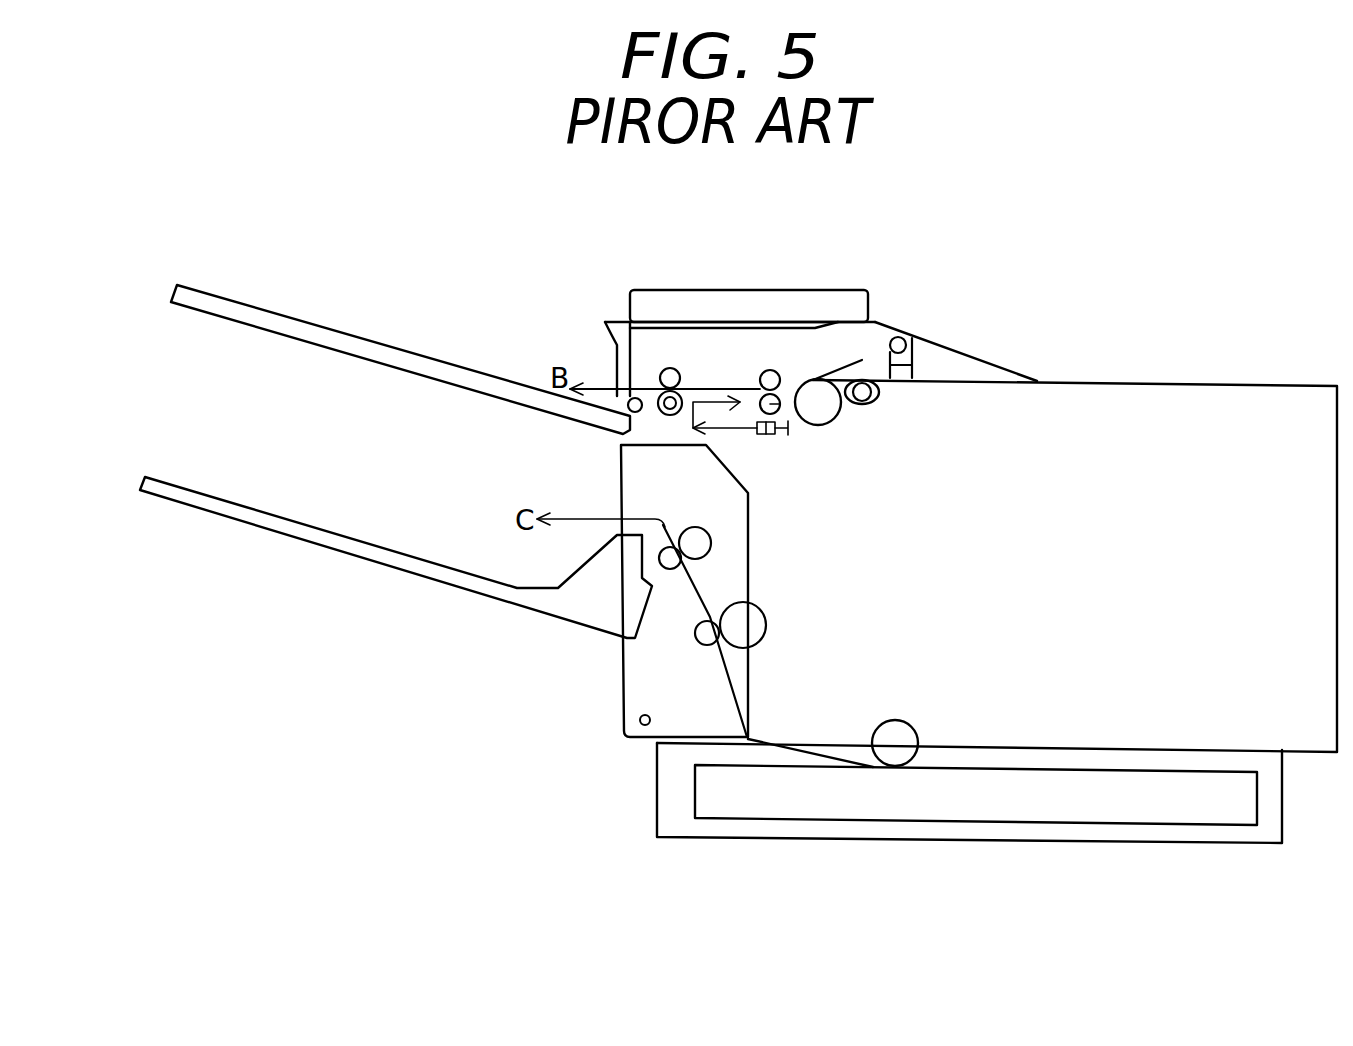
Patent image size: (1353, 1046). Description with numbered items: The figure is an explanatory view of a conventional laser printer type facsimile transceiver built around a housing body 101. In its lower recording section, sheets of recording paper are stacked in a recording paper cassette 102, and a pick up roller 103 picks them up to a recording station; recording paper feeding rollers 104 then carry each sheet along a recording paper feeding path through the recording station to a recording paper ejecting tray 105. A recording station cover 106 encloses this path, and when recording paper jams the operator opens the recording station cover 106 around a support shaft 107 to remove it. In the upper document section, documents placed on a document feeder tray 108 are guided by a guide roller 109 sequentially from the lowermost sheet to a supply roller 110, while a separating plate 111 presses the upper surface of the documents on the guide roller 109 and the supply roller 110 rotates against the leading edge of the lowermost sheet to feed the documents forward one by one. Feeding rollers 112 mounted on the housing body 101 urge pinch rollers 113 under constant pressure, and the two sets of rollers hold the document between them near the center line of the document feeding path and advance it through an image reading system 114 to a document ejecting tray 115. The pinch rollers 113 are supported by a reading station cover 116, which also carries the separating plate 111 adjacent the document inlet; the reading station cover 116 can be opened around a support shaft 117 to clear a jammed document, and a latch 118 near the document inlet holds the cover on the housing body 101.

The housing body 101 is at (1190, 382).
The recording paper cassette 102 is at (1208, 810).
The pick up roller 103 is at (897, 753).
The recording paper feeding rollers 104 is at (700, 545).
The recording paper ejecting tray 105 is at (378, 553).
The recording station cover 106 is at (620, 473).
The support shaft 107 is at (622, 735).
The document feeder tray 108 is at (950, 366).
The guide roller 109 is at (877, 400).
The supply roller 110 is at (838, 415).
The separating plate 111 is at (818, 380).
The feeding rollers 112 is at (665, 418).
The pinch rollers 113 is at (760, 380).
The image reading system 114 is at (757, 340).
The document ejecting tray 115 is at (345, 348).
The reading station cover 116 is at (837, 303).
The support shaft 117 is at (628, 401).
The latch 118 is at (912, 338).